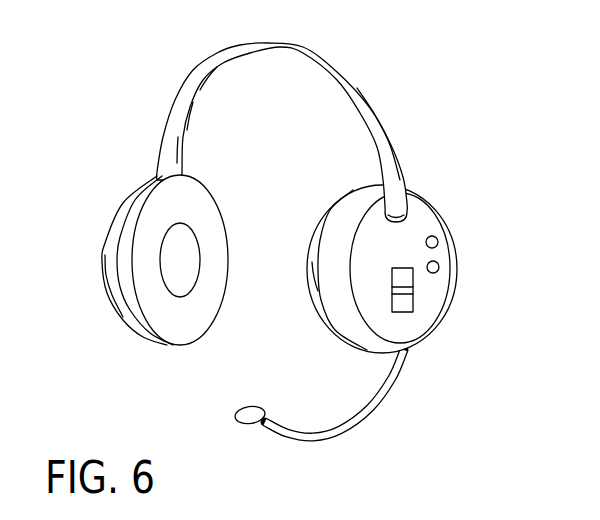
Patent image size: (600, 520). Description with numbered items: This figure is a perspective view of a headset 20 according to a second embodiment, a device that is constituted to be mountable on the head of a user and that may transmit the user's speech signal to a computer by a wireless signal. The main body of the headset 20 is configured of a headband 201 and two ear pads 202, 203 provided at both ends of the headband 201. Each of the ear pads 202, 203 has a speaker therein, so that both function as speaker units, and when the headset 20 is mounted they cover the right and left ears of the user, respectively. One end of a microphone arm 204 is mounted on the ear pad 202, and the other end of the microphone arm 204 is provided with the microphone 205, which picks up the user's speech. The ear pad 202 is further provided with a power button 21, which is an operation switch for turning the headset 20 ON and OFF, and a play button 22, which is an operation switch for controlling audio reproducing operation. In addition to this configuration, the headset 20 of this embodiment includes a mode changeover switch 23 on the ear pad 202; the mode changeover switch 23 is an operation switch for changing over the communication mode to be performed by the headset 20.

The headset 20 is at (398, 63).
The headband 201 is at (387, 121).
The ear pad 202 is at (407, 287).
The ear pad 203 is at (195, 330).
The microphone arm 204 is at (340, 439).
The microphone 205 is at (258, 410).
The power button 21 is at (438, 243).
The play button 22 is at (440, 268).
The mode changeover switch 23 is at (413, 302).